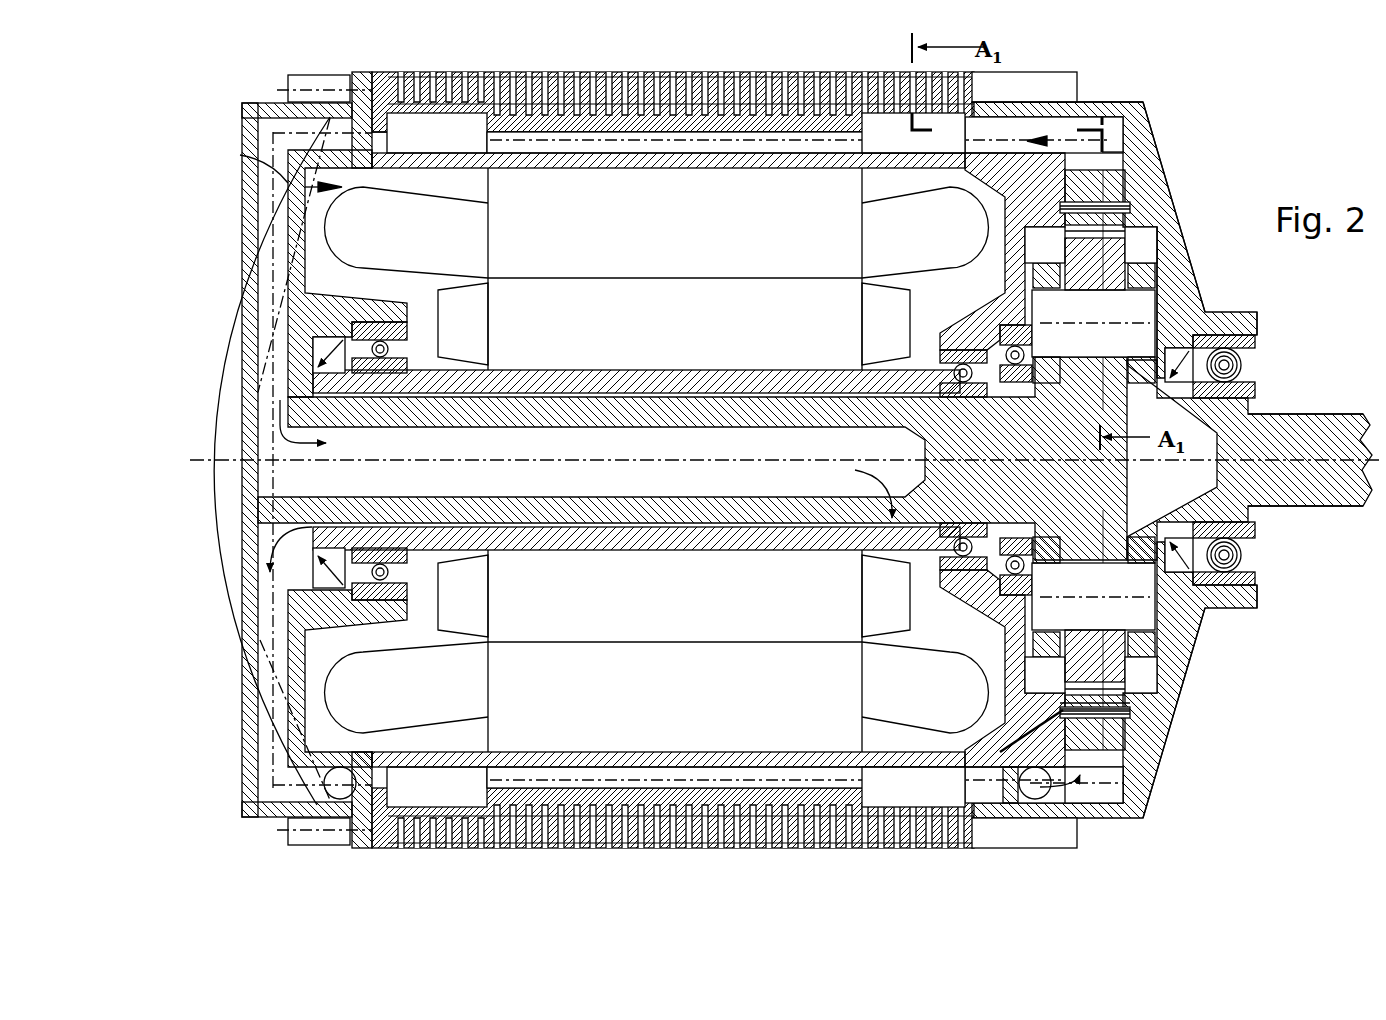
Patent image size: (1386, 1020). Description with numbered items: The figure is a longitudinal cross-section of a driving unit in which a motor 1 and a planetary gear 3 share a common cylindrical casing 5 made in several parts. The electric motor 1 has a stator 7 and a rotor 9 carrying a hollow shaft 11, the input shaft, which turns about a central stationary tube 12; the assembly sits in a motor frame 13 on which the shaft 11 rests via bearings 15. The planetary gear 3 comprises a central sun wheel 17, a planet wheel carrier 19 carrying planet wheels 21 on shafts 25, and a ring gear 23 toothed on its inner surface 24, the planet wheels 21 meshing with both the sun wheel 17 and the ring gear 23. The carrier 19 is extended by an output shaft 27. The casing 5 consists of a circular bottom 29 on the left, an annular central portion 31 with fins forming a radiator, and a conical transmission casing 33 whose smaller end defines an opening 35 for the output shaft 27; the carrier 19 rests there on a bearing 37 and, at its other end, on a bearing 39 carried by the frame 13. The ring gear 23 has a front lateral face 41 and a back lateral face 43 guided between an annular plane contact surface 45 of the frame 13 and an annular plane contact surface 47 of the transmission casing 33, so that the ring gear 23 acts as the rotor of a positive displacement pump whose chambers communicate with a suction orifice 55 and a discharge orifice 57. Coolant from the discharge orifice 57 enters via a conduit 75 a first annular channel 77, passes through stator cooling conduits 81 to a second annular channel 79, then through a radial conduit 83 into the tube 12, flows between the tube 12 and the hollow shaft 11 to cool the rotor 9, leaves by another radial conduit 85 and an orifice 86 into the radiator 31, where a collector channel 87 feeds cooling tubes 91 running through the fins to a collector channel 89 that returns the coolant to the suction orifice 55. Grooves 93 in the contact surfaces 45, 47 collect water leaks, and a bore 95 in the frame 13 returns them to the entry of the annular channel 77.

The motor 1 is at (240, 155).
The planetary gear 3 is at (1190, 263).
The casing 5 is at (205, 346).
The stator 7 is at (669, 234).
The rotor 9 is at (669, 339).
The hollow shaft 11 is at (738, 378).
The central stationary tube 12 is at (783, 410).
The motor frame 13 is at (435, 172).
The bearings 15 is at (412, 338).
The sun wheel 17 is at (1103, 495).
The planet wheel carrier 19 is at (1178, 282).
The planet wheels 21 is at (1022, 258).
The ring gear 23 is at (1118, 185).
The inner surface 24 is at (1128, 238).
The shafts 25 is at (1022, 316).
The output shaft 27 is at (1305, 432).
The circular bottom 29 is at (250, 765).
The annular central portion 31 is at (688, 858).
The transmission casing 33 is at (1150, 765).
The opening 35 is at (1240, 576).
The bearing 37 is at (1243, 552).
The bearing 39 is at (988, 598).
The front lateral face 41 is at (1180, 207).
The back lateral face 43 is at (1002, 212).
The annular plane contact surface 45 is at (1098, 162).
The annular plane contact surface 47 is at (1117, 128).
The suction orifice 55 is at (1098, 798).
The discharge orifice 57 is at (1112, 115).
The conduit 75 is at (1030, 112).
The first annular channel 77 is at (875, 110).
The second annular channel 79 is at (433, 105).
The cooling conduits 81 is at (752, 150).
The radial conduit 83 is at (262, 212).
The radial conduit 85 is at (262, 730).
The orifice 86 is at (345, 775).
The collector channel 87 is at (325, 835).
The collector channel 89 is at (1020, 835).
The cooling tubes 91 is at (580, 835).
The grooves 93 is at (1155, 740).
The bore 95 is at (1005, 736).